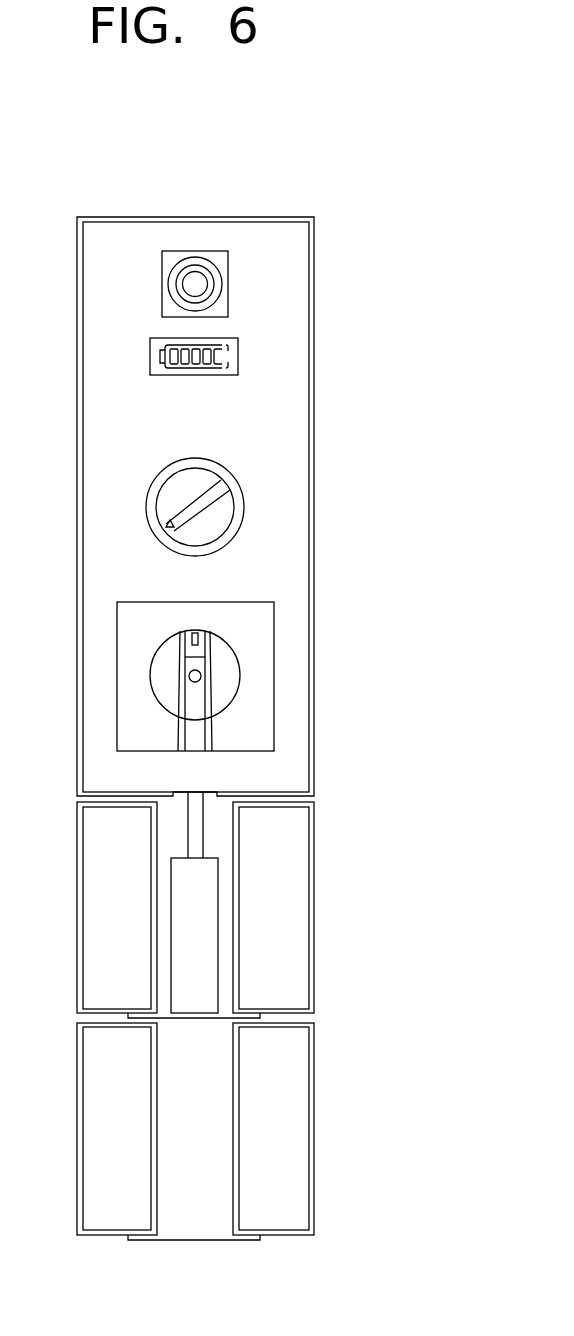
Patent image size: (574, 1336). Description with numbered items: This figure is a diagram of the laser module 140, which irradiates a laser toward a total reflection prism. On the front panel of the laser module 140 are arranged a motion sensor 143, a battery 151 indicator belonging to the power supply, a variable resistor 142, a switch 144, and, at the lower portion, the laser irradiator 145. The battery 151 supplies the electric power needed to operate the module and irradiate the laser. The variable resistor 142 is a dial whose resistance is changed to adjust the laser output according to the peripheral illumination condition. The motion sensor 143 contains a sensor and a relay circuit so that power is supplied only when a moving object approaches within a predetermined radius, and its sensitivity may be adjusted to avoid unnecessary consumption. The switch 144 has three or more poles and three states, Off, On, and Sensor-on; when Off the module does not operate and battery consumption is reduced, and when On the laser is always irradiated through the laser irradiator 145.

The laser module 140 is at (377, 223).
The motion sensor 143 is at (215, 251).
The battery 151 is at (240, 357).
The variable resistor 142 is at (252, 485).
The switch 144 is at (274, 695).
The laser irradiator 145 is at (203, 947).